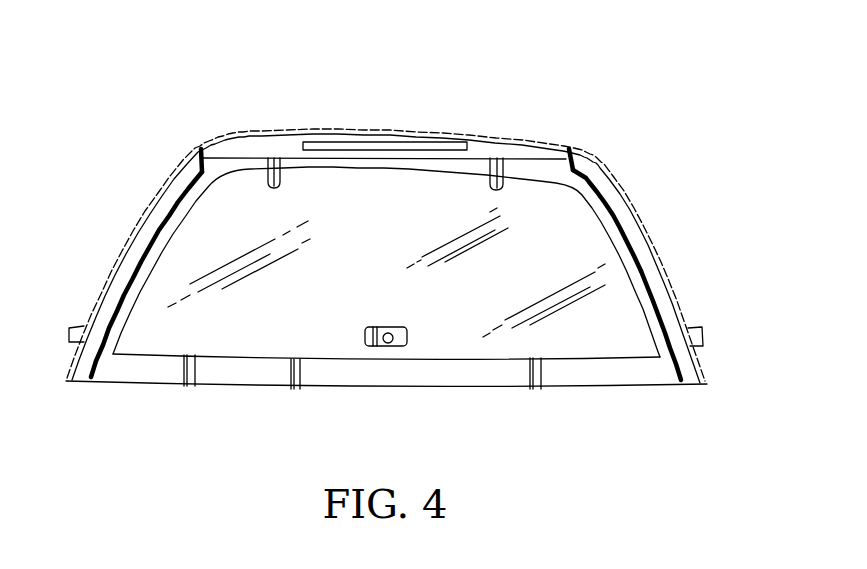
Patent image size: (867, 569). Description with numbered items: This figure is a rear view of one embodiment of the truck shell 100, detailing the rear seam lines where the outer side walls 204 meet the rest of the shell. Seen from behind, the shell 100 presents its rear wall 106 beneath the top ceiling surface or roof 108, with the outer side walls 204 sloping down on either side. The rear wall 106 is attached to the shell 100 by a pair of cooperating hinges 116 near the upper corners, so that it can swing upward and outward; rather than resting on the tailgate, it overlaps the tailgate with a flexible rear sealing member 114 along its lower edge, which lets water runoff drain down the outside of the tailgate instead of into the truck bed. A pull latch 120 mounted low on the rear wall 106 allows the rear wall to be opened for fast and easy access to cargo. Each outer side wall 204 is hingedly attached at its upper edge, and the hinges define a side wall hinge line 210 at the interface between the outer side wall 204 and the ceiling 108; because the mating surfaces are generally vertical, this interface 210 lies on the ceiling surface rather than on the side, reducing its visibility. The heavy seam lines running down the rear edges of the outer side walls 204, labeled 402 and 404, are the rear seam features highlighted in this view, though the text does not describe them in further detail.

The truck shell 100 is at (484, 91).
The rear wall 106 is at (298, 187).
The top ceiling surface or roof 108 is at (513, 152).
The flexible rear sealing member 114 is at (587, 373).
The cooperating hinges 116 is at (549, 167).
The pull latch 120 is at (365, 331).
The outer side wall 204 is at (677, 318).
The side wall hinge line 210 is at (202, 147).
The seal 402 is at (138, 250).
The seal lip 404 is at (645, 268).